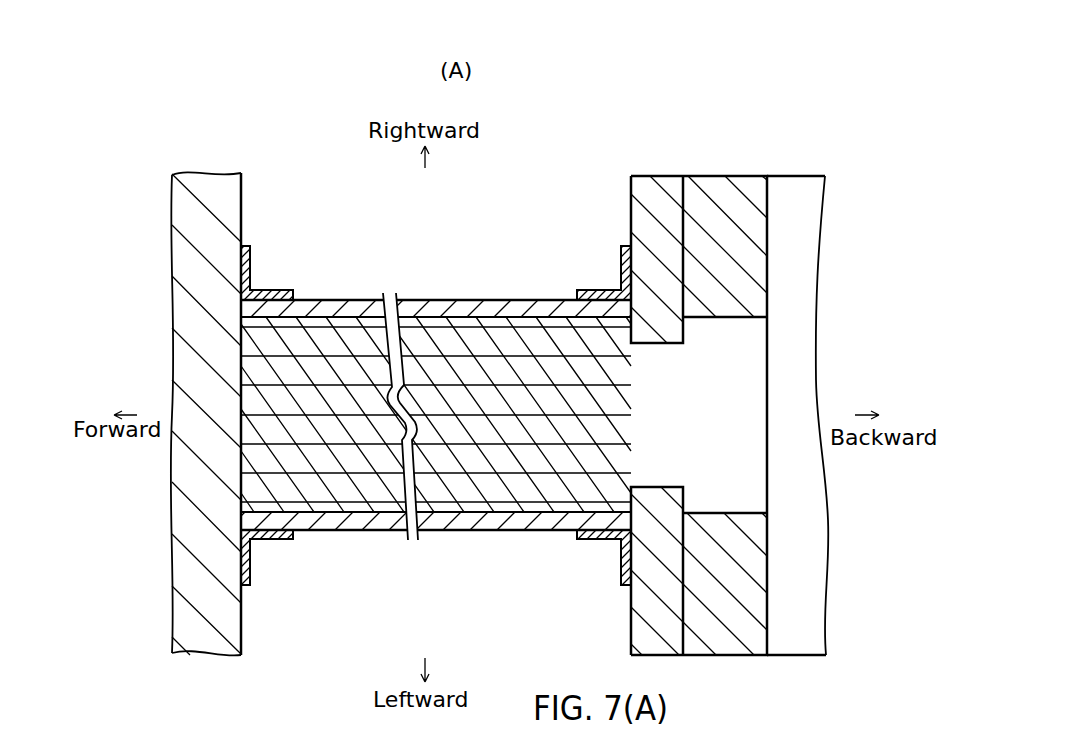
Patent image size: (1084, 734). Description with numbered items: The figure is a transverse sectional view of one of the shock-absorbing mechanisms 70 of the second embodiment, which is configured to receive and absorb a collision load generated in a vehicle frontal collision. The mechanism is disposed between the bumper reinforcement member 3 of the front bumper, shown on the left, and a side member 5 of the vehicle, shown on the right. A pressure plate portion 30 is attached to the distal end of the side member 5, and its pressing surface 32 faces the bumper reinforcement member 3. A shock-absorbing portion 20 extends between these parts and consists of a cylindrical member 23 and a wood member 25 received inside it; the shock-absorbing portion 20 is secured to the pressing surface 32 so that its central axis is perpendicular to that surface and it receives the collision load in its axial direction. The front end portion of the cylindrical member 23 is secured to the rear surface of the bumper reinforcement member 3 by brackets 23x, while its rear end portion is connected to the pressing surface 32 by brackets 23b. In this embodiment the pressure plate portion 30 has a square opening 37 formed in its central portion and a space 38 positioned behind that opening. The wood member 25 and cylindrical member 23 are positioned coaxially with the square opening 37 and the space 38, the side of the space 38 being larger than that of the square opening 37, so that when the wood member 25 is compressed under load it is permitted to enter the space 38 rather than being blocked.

The bumper reinforcement member 3 is at (218, 510).
The side member 5 is at (796, 195).
The shock-absorbing portion 20 is at (436, 410).
The cylindrical member 23 is at (518, 303).
The bracket 23x is at (278, 290).
The bracket 23b is at (600, 290).
The wood member 25 is at (457, 430).
The pressure plate portion 30 is at (733, 376).
The pressing surface 32 is at (632, 188).
The square opening 37 is at (650, 345).
The space 38 is at (716, 512).
The shock-absorbing mechanism 70 is at (535, 137).